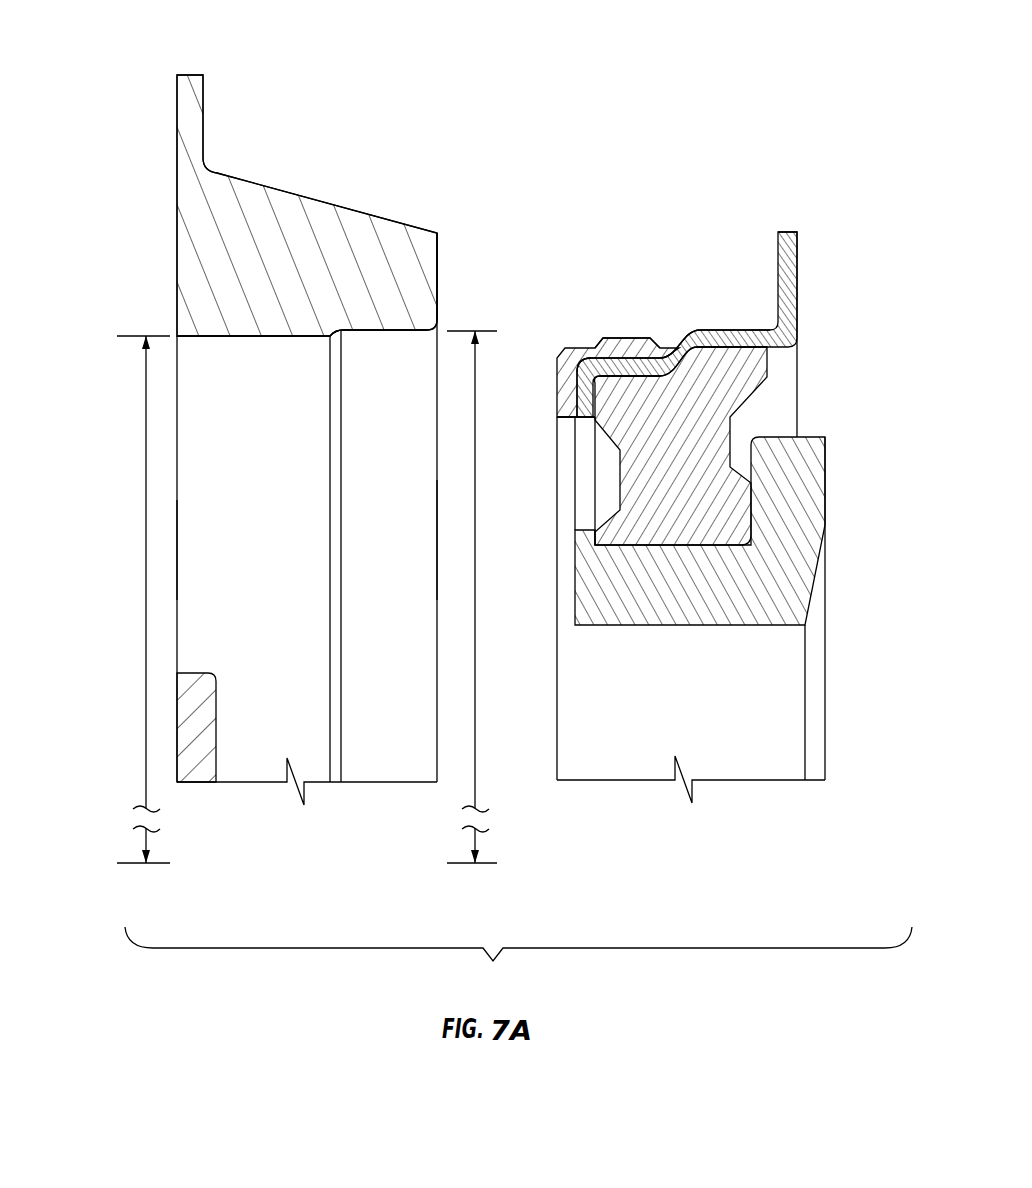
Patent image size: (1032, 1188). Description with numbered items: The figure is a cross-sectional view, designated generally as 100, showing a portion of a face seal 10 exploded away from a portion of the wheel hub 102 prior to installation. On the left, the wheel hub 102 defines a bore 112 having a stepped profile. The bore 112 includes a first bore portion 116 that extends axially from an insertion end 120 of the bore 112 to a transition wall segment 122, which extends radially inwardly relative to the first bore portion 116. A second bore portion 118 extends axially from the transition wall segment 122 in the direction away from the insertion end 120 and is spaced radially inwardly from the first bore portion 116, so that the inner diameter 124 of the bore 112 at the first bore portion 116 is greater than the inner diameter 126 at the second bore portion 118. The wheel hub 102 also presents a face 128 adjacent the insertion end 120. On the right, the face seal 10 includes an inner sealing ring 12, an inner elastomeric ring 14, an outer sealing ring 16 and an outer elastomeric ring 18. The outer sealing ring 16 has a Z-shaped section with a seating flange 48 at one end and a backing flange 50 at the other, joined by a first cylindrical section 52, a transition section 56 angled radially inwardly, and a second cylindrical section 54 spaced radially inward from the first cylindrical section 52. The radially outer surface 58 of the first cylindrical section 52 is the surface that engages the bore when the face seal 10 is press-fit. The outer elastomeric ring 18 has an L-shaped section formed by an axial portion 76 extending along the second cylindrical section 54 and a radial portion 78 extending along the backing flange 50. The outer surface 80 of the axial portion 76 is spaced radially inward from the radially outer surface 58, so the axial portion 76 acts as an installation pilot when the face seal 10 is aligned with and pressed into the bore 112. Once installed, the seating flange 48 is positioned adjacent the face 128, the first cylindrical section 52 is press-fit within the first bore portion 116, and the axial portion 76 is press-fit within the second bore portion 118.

The seal assembly 100 is at (103, 92).
The wheel hub 102 is at (205, 270).
The bore 112 is at (248, 569).
The first bore portion 116 is at (372, 336).
The second bore portion 118 is at (218, 338).
The insertion end 120 is at (437, 533).
The transition wall segment 122 is at (343, 338).
The inner diameter 124 is at (475, 643).
The inner diameter 126 is at (146, 622).
The face 128 is at (437, 278).
The face seal 10 is at (858, 208).
The inner sealing ring 12 is at (678, 590).
The inner elastomeric ring 14 is at (733, 510).
The outer sealing ring 16 is at (797, 297).
The outer elastomeric ring 18 is at (556, 380).
The seating flange 48 is at (782, 232).
The backing flange 50 is at (587, 412).
The first cylindrical section 52 is at (738, 333).
The second cylindrical section 54 is at (647, 362).
The transition section 56 is at (697, 362).
The radially outer surface 58 is at (718, 328).
The axial portion 76 is at (600, 348).
The radial portion 78 is at (565, 405).
The outer surface 80 is at (620, 337).